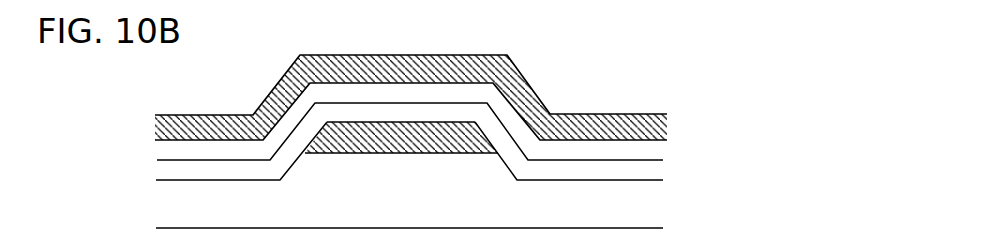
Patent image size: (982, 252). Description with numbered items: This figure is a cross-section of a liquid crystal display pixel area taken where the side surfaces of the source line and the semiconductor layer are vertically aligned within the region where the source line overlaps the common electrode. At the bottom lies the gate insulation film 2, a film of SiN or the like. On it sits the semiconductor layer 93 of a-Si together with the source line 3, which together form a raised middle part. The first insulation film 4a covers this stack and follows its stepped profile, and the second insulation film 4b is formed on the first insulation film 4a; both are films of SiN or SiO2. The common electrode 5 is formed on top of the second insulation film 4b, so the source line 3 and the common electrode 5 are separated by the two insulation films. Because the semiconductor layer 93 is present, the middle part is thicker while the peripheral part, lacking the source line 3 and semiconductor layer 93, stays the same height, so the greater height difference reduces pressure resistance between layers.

The gate insulation film 2 is at (652, 213).
The source line 3 is at (467, 153).
The first insulation film 4a is at (652, 172).
The second insulation film 4b is at (650, 150).
The common electrode 5 is at (662, 122).
The semiconductor layer 93 is at (382, 173).